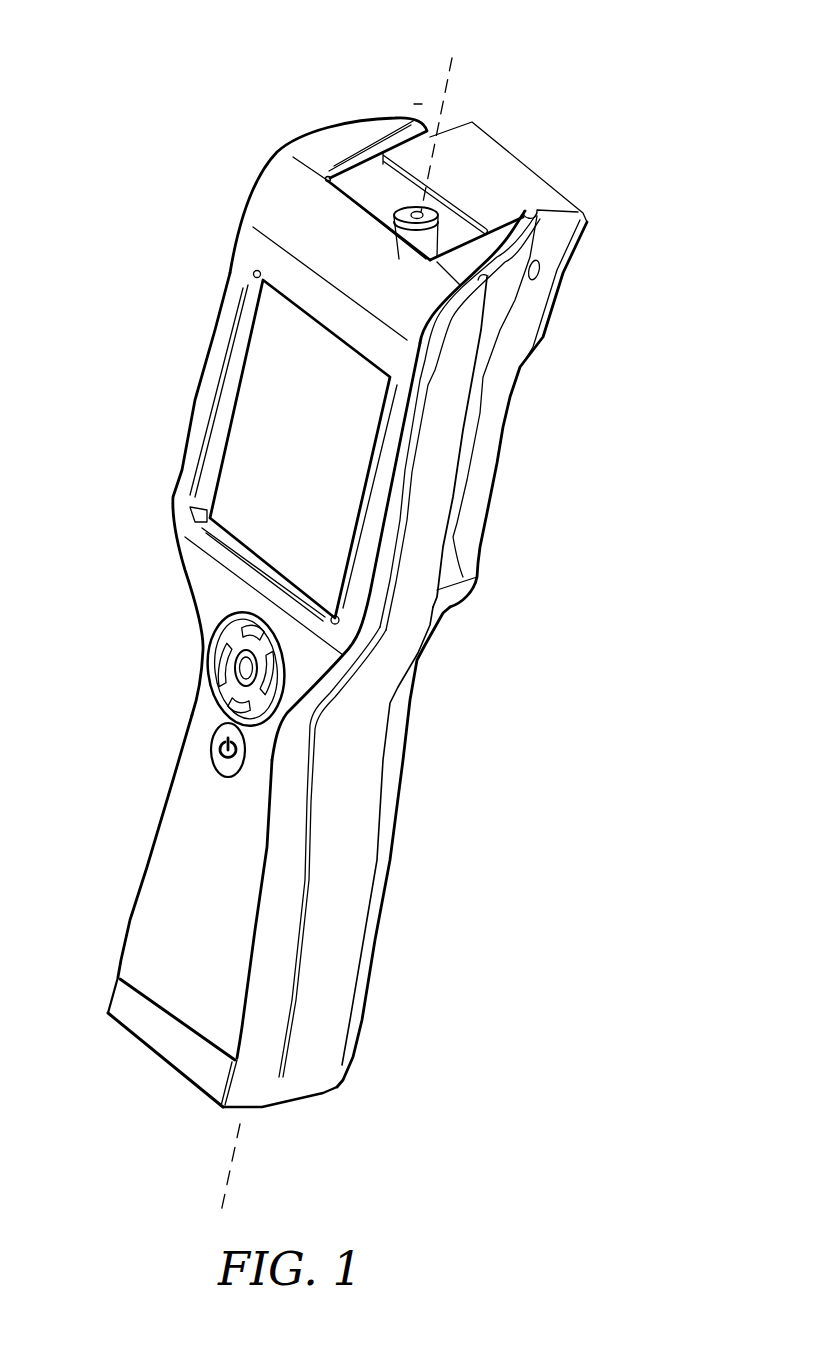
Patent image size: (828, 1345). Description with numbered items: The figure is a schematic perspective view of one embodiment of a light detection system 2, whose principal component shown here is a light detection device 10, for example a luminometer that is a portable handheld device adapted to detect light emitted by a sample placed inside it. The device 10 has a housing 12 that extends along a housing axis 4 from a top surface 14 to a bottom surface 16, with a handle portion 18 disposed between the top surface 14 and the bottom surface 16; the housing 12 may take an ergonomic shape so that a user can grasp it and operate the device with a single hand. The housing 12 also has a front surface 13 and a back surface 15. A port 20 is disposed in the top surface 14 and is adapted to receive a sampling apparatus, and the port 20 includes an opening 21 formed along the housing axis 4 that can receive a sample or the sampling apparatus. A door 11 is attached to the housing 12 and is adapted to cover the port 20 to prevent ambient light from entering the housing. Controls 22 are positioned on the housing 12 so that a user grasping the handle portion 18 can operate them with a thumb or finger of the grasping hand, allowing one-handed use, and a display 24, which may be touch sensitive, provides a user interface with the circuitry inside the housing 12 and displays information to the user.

The light detection system 2 is at (106, 179).
The housing axis 4 is at (449, 60).
The light detection device 10 is at (631, 298).
The door 11 is at (535, 170).
The housing 12 is at (445, 832).
The front surface 13 is at (148, 930).
The top surface 14 is at (315, 158).
The back surface 15 is at (375, 977).
The bottom surface 16 is at (145, 1053).
The handle portion 18 is at (128, 814).
The port 20 is at (416, 78).
The opening 21 is at (410, 208).
The controls 22 is at (200, 669).
The display 24 is at (236, 458).